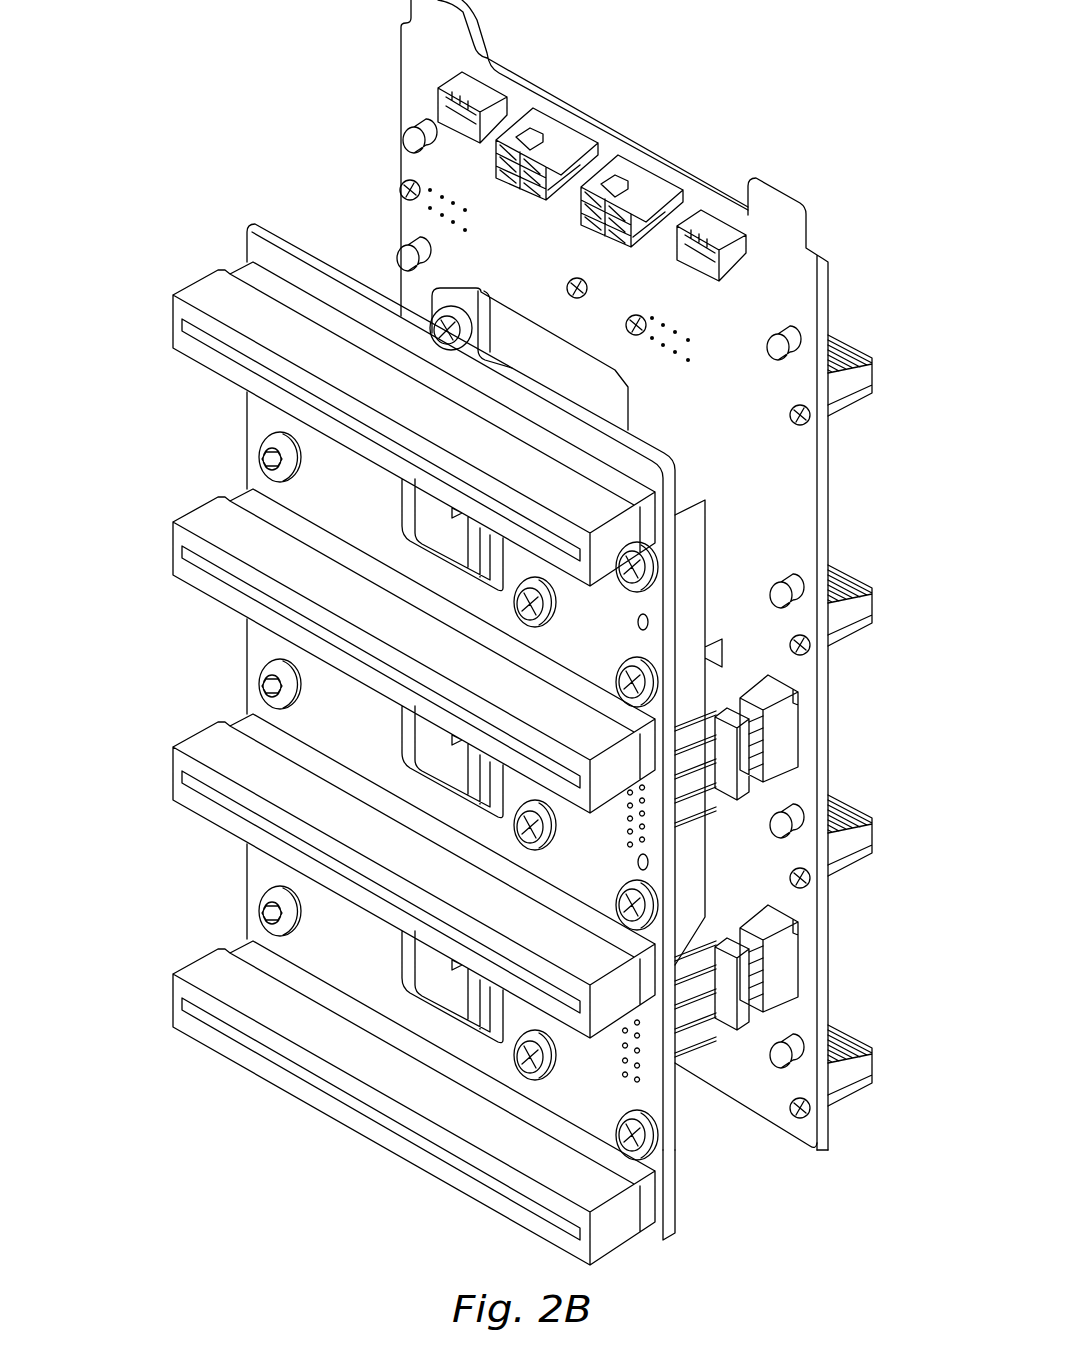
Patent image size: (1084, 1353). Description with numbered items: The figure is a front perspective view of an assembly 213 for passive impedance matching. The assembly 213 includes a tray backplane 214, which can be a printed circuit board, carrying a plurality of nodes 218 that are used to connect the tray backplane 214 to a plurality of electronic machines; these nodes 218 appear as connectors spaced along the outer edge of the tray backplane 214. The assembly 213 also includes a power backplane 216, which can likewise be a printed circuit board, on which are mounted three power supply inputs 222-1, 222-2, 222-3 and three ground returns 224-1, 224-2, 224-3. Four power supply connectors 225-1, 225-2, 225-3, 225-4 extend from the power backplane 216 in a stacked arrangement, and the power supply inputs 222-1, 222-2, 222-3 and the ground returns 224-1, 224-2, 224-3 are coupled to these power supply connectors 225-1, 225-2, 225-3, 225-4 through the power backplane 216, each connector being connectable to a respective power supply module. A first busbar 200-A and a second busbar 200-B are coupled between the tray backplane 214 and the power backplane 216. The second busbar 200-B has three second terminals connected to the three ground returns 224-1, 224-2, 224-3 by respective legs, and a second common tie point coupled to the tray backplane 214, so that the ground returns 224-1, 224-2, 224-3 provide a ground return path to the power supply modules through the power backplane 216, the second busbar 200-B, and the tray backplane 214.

The assembly 213 is at (176, 40).
The first busbar 200-A is at (427, 524).
The second busbar 200-B is at (706, 553).
The tray backplane 214 is at (828, 1133).
The power backplane 216 is at (674, 1226).
The nodes 218 is at (877, 369).
The power supply input 222-1 is at (268, 466).
The power supply input 222-2 is at (268, 693).
The power supply input 222-3 is at (268, 920).
The ground return 224-1 is at (523, 612).
The ground return 224-2 is at (523, 839).
The ground return 224-3 is at (523, 1066).
The power supply connector 225-1 is at (171, 997).
The power supply connector 225-2 is at (171, 772).
The power supply connector 225-3 is at (171, 547).
The power supply connector 225-4 is at (171, 320).